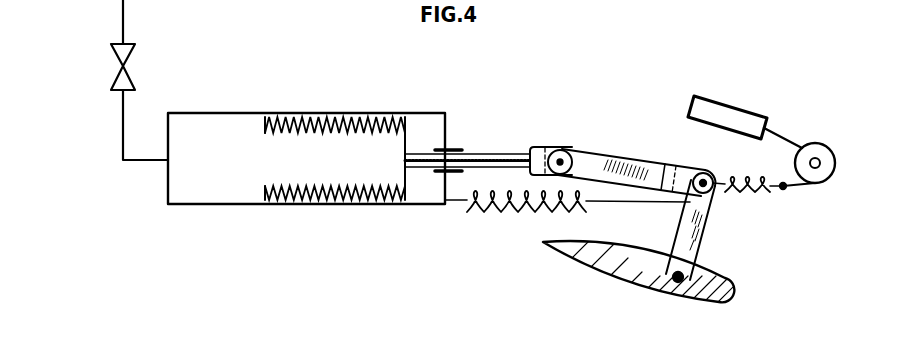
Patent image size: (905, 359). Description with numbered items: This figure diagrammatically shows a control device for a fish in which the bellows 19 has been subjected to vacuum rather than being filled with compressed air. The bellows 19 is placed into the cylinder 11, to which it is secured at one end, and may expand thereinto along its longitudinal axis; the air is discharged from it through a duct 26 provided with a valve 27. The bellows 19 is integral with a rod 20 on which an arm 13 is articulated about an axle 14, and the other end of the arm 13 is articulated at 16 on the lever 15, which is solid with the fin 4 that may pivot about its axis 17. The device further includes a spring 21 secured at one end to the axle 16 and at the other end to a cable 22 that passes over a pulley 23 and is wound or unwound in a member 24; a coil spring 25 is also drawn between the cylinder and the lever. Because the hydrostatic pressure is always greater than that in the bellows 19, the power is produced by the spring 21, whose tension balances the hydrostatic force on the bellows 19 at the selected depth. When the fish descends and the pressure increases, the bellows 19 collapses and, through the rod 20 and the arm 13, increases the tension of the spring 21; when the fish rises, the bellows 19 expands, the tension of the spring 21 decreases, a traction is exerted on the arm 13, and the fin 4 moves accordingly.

The fin 4 is at (716, 287).
The cylinder 11 is at (337, 114).
The arm 13 is at (630, 165).
The axle 14 is at (567, 153).
The lever 15 is at (699, 234).
The articulation (axle) 16 is at (704, 175).
The fin axis 17 is at (676, 283).
The bellows 19 is at (214, 157).
The rod 20 is at (486, 153).
The spring 21 is at (765, 192).
The cable 22 is at (796, 131).
The pulley 23 is at (826, 153).
The member 24 is at (725, 113).
The coil spring 25 is at (517, 203).
The duct 26 is at (118, 133).
The valve 27 is at (118, 62).